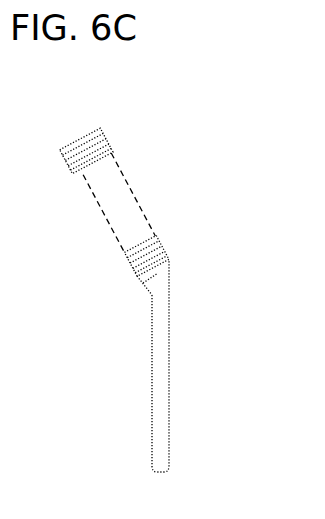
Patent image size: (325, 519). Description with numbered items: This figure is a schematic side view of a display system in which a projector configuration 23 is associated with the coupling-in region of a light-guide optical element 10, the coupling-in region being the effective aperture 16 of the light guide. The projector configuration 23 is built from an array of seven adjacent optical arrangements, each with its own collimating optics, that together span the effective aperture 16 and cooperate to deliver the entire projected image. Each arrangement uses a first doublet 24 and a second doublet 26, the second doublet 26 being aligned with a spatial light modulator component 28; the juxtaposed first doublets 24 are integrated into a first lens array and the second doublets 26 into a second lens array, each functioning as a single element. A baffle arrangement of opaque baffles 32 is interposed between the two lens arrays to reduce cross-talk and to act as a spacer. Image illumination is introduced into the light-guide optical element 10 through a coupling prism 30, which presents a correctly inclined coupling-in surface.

The light-guide optical element 10 is at (163, 363).
The effective aperture 16 is at (157, 290).
The projector configuration 23 is at (88, 227).
The first doublet 24 is at (150, 253).
The second doublet 26 is at (106, 148).
The spatial light modulator component 28 is at (100, 129).
The coupling prism 30 is at (158, 280).
The opaque baffles 32 is at (130, 217).